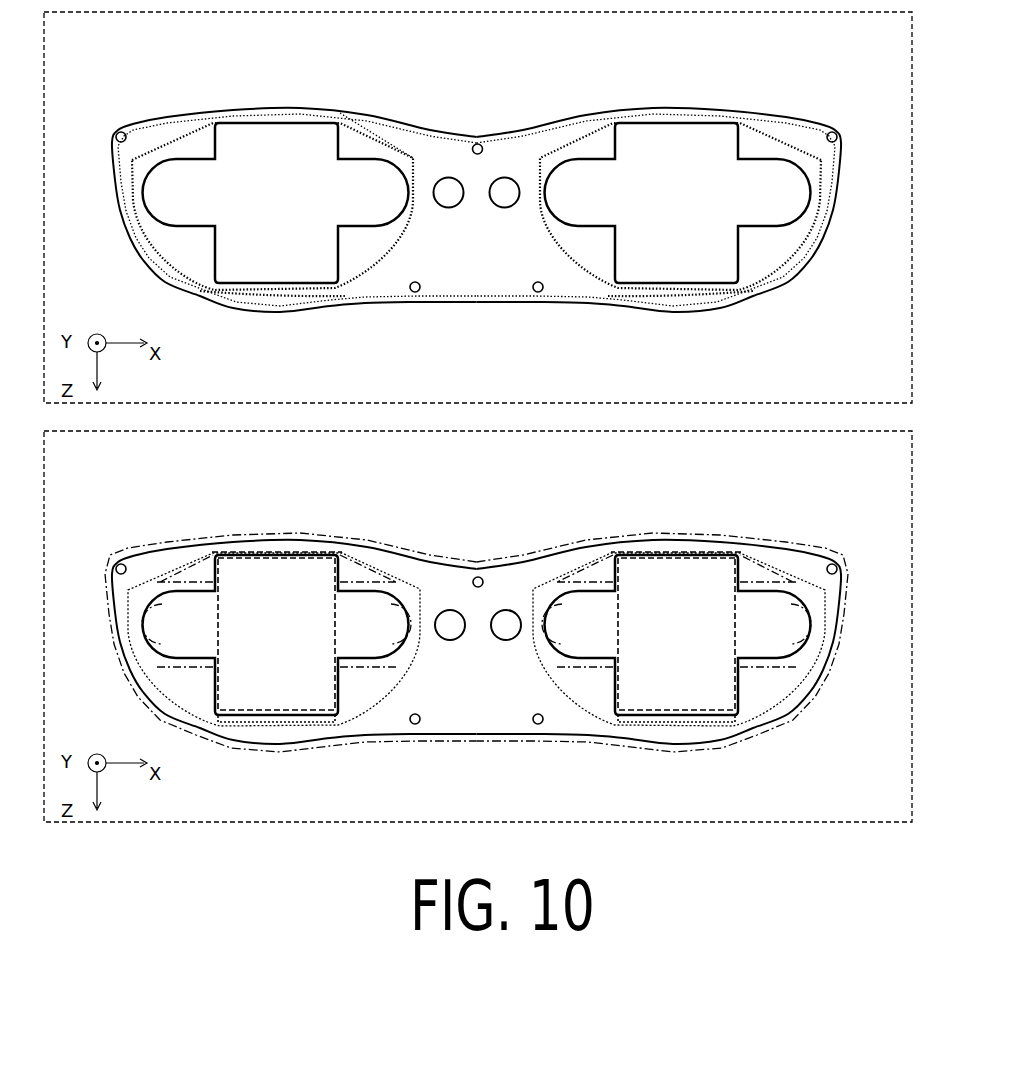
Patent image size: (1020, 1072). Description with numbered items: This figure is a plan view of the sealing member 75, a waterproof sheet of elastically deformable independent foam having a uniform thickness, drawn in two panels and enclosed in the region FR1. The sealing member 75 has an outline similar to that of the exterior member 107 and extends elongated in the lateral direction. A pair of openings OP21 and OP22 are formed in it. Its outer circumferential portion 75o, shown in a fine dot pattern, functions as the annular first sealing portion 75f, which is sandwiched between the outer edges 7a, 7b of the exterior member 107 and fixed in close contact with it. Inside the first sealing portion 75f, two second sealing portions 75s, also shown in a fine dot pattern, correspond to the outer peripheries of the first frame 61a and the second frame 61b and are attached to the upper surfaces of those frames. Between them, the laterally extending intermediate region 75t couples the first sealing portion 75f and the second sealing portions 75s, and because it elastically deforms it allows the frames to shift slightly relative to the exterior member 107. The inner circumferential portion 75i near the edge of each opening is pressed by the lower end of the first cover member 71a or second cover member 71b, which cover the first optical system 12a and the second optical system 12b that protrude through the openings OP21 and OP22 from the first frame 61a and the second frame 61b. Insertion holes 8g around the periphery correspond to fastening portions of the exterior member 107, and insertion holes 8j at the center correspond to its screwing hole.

The sealing member 75 is at (521, 153).
The second sealing portion 75s is at (160, 250).
The inner circumferential portion 75i is at (274, 290).
The outer circumferential portion 75o is at (363, 111).
The intermediate region 75t is at (404, 140).
The first sealing portion 75f is at (585, 118).
The insertion hole 8g is at (121, 131).
The insertion hole 8j is at (504, 198).
The opening OP21 is at (280, 143).
The opening OP22 is at (698, 143).
The frame FR1 is at (913, 73).
The first frame 61a is at (187, 557).
The second frame 61b is at (777, 555).
The first cover member 71a is at (203, 572).
The second cover member 71b is at (757, 577).
The exterior member 107 is at (428, 550).
The outer edge 7a is at (585, 533).
The outer edge 7b is at (663, 642).
The first optical system 12a is at (285, 716).
The second optical system 12b is at (668, 716).